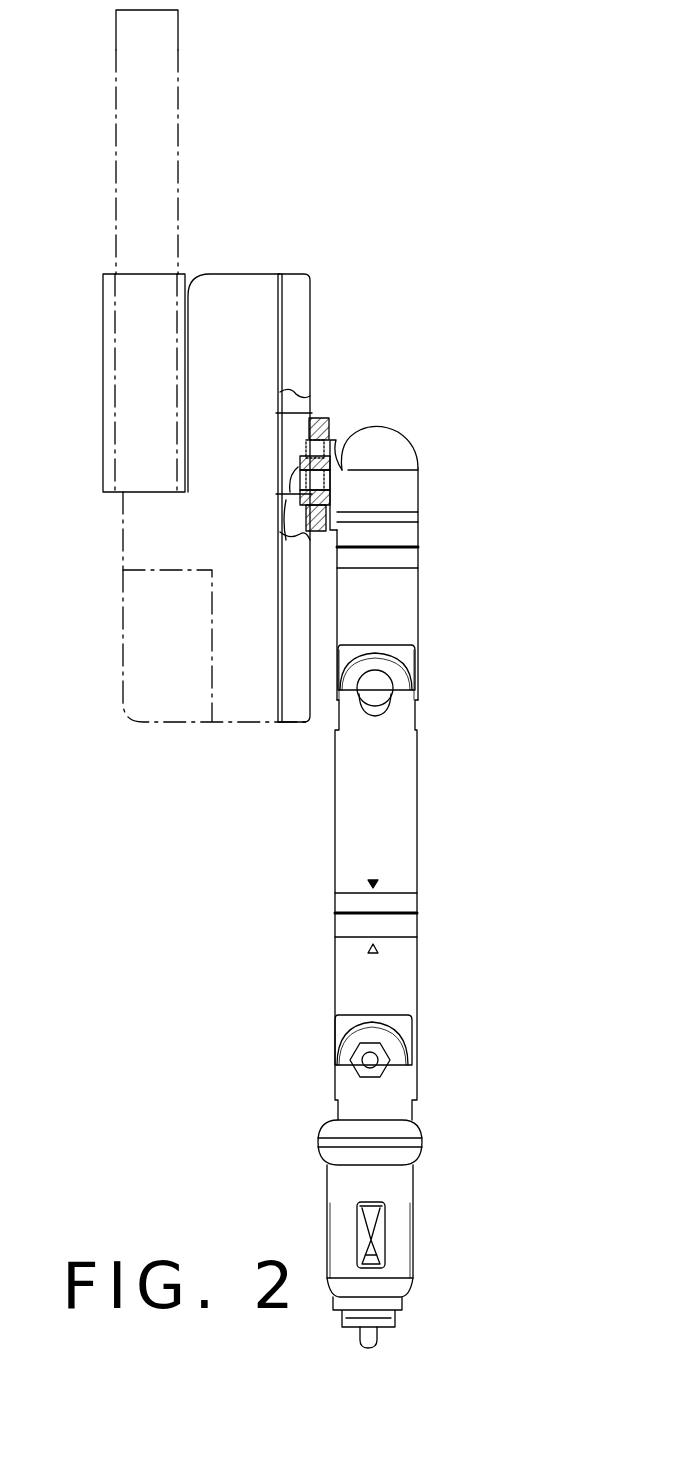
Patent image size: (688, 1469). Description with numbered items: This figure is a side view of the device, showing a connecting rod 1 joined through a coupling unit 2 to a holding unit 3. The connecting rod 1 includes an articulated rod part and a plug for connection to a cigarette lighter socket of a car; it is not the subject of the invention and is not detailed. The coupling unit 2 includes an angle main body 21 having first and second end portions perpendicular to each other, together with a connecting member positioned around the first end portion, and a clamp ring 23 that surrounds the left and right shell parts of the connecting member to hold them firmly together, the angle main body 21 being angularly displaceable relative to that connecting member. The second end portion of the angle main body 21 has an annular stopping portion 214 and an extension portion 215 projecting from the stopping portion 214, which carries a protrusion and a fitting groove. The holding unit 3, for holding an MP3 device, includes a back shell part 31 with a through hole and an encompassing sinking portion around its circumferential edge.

The connecting rod 1 is at (425, 795).
The coupling unit 2 is at (425, 488).
The angle main body 21 is at (387, 445).
The clamp ring 23 is at (412, 533).
The annular stopping portion 214 is at (325, 440).
The extension portion 215 is at (275, 523).
The holding unit 3 is at (223, 262).
The back shell part 31 is at (298, 275).